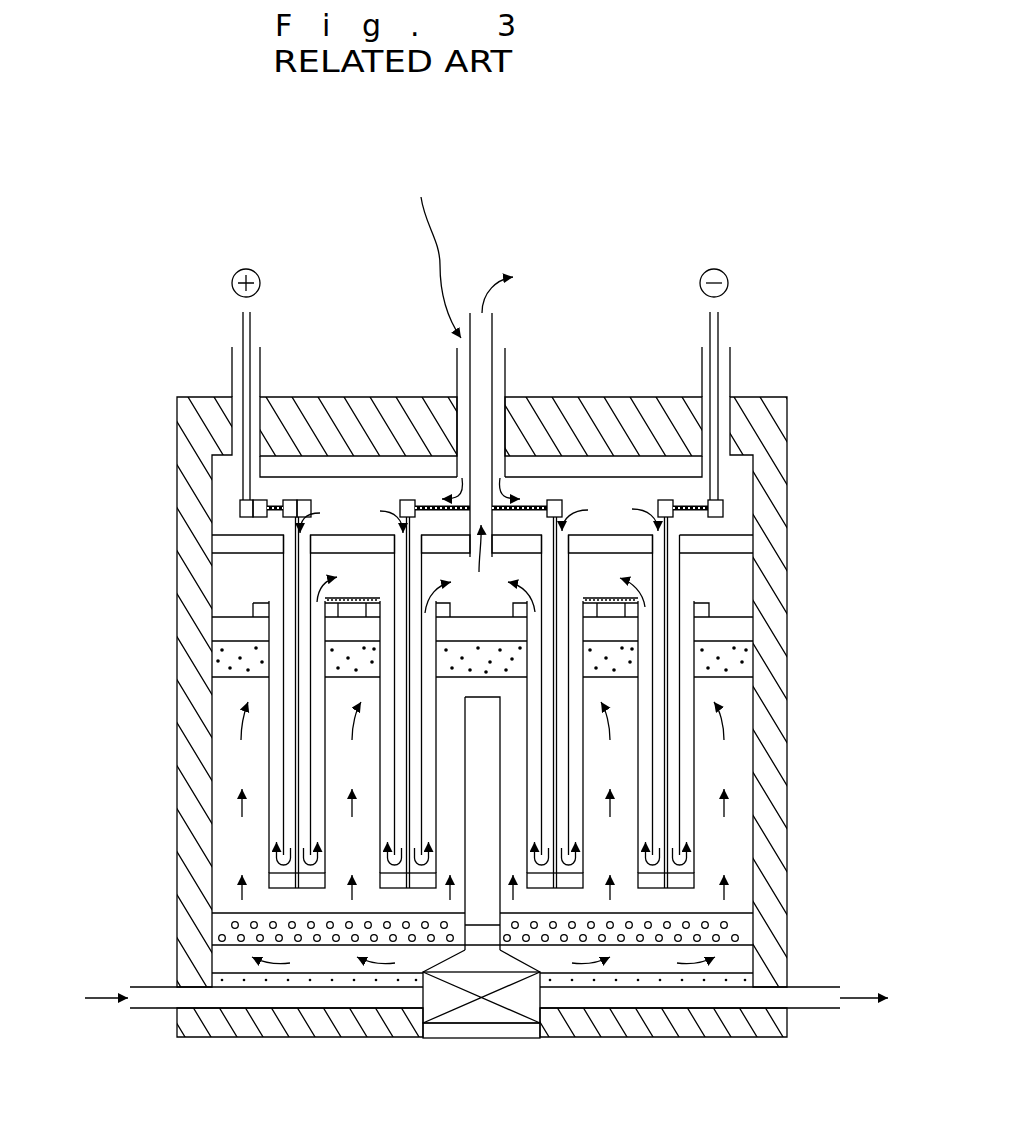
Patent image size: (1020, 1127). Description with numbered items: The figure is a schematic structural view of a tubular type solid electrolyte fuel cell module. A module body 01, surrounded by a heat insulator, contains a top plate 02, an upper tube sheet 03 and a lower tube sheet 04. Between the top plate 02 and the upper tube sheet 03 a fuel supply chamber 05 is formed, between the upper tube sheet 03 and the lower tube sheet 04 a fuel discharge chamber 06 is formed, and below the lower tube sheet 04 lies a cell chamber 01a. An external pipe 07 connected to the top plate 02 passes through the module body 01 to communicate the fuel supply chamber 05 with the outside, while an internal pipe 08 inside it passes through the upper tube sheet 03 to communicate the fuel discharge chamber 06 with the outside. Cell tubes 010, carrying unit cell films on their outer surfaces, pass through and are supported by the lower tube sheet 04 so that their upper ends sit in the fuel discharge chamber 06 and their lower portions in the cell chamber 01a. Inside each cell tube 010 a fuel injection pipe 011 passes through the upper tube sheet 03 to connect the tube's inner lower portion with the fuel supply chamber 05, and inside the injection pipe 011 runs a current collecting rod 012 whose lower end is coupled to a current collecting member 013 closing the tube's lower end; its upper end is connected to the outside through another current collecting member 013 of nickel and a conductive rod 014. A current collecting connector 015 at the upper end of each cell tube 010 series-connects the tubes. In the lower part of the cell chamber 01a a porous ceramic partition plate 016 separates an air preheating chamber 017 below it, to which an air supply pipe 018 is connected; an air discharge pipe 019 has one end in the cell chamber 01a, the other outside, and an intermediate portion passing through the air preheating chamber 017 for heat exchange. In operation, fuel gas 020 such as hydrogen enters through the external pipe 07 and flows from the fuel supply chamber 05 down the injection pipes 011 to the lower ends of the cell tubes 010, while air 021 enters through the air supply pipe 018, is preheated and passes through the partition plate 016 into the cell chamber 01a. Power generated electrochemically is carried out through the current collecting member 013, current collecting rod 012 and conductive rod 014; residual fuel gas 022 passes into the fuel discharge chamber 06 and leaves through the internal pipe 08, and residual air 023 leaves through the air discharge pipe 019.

The module body 01 is at (817, 358).
The cell chamber 01a is at (735, 760).
The top plate 02 is at (582, 465).
The upper tube sheet 03 is at (730, 540).
The lower tube sheet 04 is at (737, 627).
The fuel supply chamber 05 is at (737, 498).
The fuel discharge chamber 06 is at (730, 583).
The external pipe 07 is at (507, 362).
The internal pipe 08 is at (493, 327).
The cell tube 010 is at (267, 772).
The fuel injection pipe 011 is at (280, 728).
The current collecting rod 012 is at (293, 653).
The current collecting member 013 is at (270, 508).
The conductive rod 014 is at (241, 328).
The current collecting connector 015 is at (428, 506).
The partition plate 016 is at (742, 928).
The air preheating chamber 017 is at (483, 1038).
The air supply pipe 018 is at (163, 1010).
The air discharge pipe 019 is at (805, 1010).
The fuel gas 020 is at (815, 852).
The air 021 is at (100, 1008).
The residual fuel gas 022 is at (497, 270).
The residual air 023 is at (863, 1002).